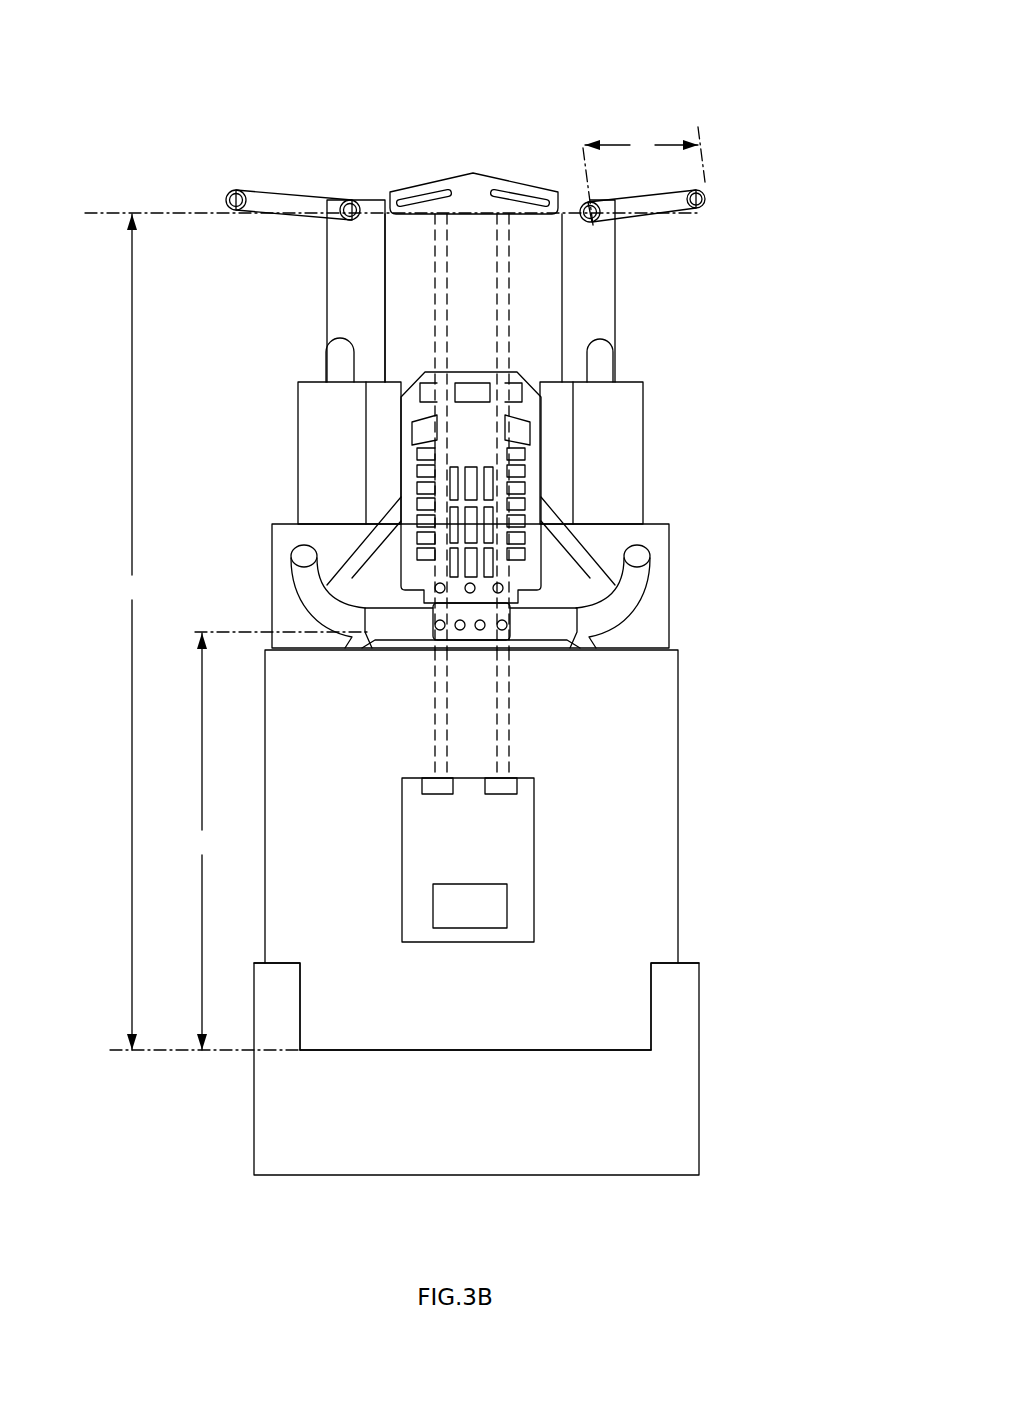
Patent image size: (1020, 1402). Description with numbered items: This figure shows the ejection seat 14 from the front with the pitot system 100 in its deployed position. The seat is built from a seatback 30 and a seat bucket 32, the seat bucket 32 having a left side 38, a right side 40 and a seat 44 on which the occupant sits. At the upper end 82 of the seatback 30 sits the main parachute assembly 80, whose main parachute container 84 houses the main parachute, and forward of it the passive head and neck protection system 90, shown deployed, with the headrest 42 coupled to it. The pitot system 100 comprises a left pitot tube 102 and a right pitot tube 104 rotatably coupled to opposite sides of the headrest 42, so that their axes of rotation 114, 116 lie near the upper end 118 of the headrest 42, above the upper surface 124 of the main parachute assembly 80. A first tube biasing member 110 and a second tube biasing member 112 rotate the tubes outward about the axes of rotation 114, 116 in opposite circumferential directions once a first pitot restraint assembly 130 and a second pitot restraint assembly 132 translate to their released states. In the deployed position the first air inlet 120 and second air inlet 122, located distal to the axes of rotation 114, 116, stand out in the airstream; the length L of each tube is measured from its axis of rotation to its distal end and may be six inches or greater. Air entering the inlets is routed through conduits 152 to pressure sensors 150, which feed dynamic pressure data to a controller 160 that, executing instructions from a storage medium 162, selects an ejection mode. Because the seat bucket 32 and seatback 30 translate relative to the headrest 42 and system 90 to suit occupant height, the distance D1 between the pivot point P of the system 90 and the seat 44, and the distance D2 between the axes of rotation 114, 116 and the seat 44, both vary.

The ejection seat 14 is at (692, 118).
The pitot system 100 is at (368, 162).
The left pitot tube 102 is at (655, 207).
The right pitot tube 104 is at (273, 195).
The first tube biasing member 110 is at (590, 207).
The second tube biasing member 112 is at (345, 200).
The axis of rotation of left pitot tube 114 is at (594, 220).
The axis of rotation of right pitot tube 116 is at (346, 218).
The upper end of headrest 118 is at (473, 173).
The first air inlet 120 is at (703, 207).
The second air inlet 122 is at (226, 200).
The upper surface of main parachute assembly 124 is at (228, 408).
The first pitot restraint assembly 130 is at (640, 345).
The second pitot restraint assembly 132 is at (300, 345).
The headrest 42 is at (486, 281).
The main parachute container 84 is at (624, 469).
The passive head and neck protection (PHNP) system 90 is at (390, 496).
The main parachute assembly 80 is at (669, 545).
The upper end of seatback 82 is at (656, 648).
The pivot point P is at (358, 625).
The seatback 30 is at (317, 751).
The conduits 152 is at (438, 680).
The pressure sensors 150 is at (430, 787).
The controller 160 is at (487, 839).
The storage medium 162 is at (487, 918).
The seat 44 is at (455, 1050).
The seat bucket 32 is at (462, 1133).
The right side of seat bucket 40 is at (254, 1138).
The left side of seat bucket 38 is at (699, 1138).
The distance D1 is at (201, 841).
The distance D2 is at (137, 632).
The length L is at (644, 176).